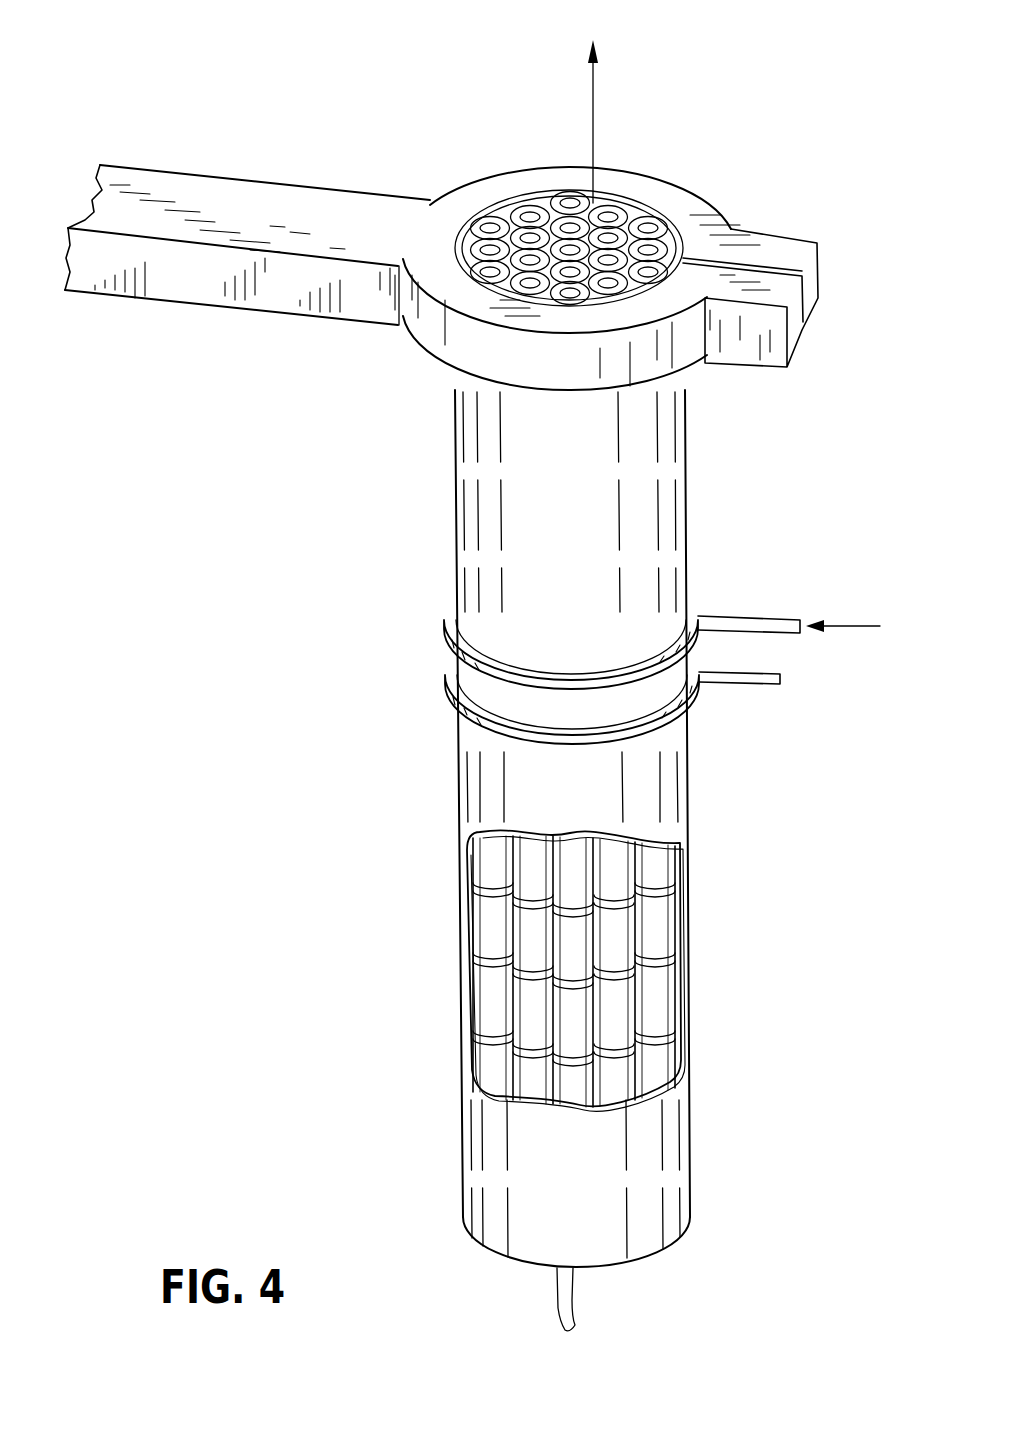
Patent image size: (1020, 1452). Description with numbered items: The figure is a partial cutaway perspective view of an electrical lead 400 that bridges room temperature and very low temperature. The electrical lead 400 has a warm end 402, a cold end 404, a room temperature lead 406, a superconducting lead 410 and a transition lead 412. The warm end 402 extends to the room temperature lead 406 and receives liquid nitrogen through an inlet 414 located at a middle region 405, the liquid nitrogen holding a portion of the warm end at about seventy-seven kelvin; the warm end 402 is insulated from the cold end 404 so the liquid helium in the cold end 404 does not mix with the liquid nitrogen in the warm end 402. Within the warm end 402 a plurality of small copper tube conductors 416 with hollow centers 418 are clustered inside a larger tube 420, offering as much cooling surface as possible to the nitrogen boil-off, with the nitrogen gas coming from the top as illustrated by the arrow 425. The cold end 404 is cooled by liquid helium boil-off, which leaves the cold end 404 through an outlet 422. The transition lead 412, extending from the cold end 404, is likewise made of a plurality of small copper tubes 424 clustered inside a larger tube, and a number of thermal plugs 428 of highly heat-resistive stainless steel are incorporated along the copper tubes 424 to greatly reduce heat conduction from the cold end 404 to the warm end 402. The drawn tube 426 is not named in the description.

The electrical lead 400 is at (450, 535).
The warm end 402 is at (712, 205).
The cold end 404 is at (690, 1220).
The middle region 405 is at (447, 658).
The room temperature lead 406 is at (262, 198).
The superconducting lead 410 is at (573, 1293).
The transition lead 412 is at (665, 917).
The inlet 414 is at (758, 617).
The copper tube conductors 416 is at (617, 215).
The hollow centers 418 is at (567, 248).
The larger tube 420 is at (497, 202).
The outlet 422 is at (785, 680).
The small copper tubes 424 is at (490, 860).
The arrow 425 is at (597, 99).
The tube 426 is at (678, 967).
The thermal plugs 428 is at (490, 1033).